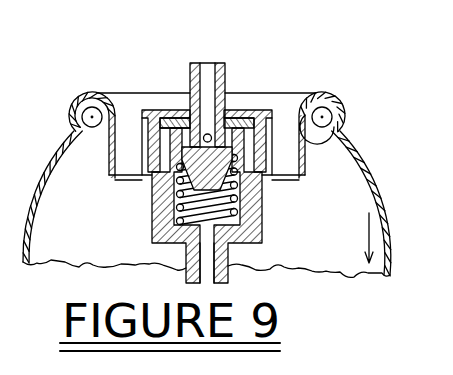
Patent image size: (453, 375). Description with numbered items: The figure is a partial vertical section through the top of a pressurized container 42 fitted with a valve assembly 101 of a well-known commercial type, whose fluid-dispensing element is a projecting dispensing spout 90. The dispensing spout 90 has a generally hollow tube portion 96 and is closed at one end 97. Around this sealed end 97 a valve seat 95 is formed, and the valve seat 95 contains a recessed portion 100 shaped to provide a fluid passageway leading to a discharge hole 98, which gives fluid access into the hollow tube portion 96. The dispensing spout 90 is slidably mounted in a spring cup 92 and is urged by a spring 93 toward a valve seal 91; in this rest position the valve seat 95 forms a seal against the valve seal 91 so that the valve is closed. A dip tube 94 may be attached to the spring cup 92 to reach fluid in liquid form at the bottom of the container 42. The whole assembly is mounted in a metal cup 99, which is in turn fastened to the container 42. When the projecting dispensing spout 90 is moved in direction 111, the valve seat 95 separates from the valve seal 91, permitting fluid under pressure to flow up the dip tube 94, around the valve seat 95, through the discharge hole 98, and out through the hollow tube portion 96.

The pressurized container 42 is at (358, 153).
The projecting dispensing spout 90 is at (227, 70).
The valve seal 91 is at (252, 112).
The spring cup 92 is at (153, 238).
The spring 93 is at (258, 209).
The dip tube 94 is at (227, 259).
The valve seat 95 is at (173, 118).
The hollow tube portion 96 is at (206, 74).
The closed end 97 is at (218, 147).
The discharge hole 98 is at (161, 177).
The metal cup 99 is at (127, 91).
The recessed portion 100 is at (187, 127).
The valve assembly 101 is at (327, 99).
The direction of movement 111 is at (353, 238).